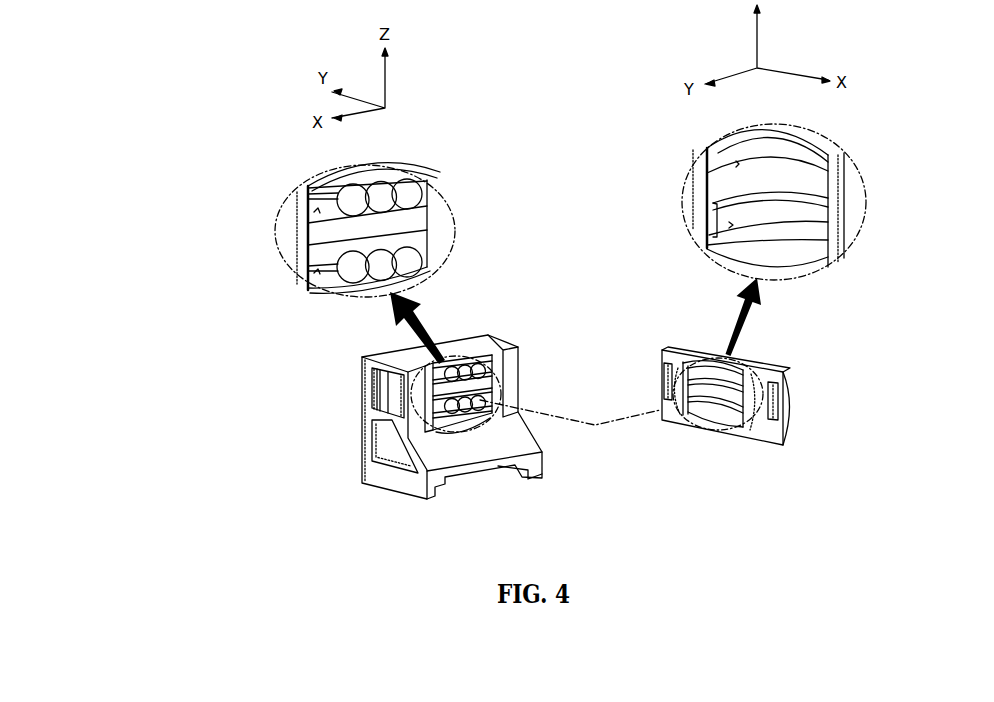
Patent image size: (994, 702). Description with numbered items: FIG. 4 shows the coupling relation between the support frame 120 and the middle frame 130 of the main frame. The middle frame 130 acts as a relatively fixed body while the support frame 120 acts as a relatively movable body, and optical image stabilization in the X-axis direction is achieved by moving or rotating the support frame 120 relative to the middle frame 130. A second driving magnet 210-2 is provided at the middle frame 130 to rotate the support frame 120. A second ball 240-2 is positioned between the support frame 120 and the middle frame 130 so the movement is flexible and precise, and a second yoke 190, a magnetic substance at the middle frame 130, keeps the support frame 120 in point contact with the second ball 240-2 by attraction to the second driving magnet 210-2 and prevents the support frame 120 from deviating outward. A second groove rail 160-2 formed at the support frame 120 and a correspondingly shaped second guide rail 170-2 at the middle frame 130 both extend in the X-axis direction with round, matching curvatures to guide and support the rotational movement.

The support frame 120 is at (433, 356).
The middle frame 130 is at (703, 356).
The second groove rail 160-2 is at (440, 416).
The second guide rail 170-2 is at (714, 408).
The second yoke 190 is at (662, 381).
The second driving magnet 210-2 is at (392, 398).
The second ball 240-2 is at (463, 356).